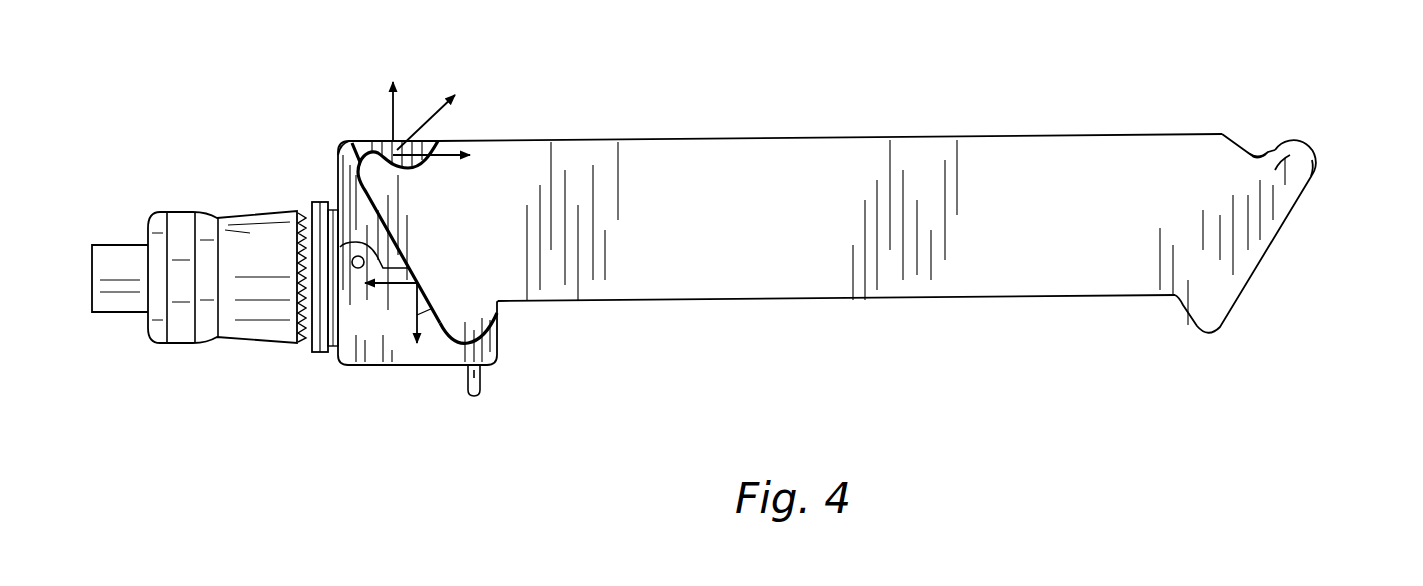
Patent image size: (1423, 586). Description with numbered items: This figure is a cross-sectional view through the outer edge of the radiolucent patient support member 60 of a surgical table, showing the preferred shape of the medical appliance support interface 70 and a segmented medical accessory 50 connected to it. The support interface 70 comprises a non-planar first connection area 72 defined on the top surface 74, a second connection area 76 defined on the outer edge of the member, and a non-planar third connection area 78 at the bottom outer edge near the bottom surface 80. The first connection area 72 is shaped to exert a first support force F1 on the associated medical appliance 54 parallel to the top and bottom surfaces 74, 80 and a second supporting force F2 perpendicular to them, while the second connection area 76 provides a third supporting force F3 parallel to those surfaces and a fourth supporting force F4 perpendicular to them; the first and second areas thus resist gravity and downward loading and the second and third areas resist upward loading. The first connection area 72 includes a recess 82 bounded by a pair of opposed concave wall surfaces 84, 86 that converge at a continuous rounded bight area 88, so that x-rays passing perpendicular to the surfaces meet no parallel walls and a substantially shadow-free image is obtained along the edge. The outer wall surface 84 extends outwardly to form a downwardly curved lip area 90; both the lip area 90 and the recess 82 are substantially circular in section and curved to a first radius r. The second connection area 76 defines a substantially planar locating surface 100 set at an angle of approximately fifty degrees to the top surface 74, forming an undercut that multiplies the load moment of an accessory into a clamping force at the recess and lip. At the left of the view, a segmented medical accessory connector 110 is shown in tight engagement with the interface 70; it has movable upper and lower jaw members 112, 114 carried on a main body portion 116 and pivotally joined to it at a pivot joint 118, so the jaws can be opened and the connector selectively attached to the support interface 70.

The cam arm body 50 is at (829, 215).
The medical appliance 54 is at (232, 258).
The radiolucent patient support member 60 is at (745, 228).
The medical appliance support interface 70 is at (880, 191).
The first connection area 72 is at (454, 124).
The top surface 74 is at (760, 139).
The second connection area 76 is at (437, 256).
The third connection area 78 is at (471, 321).
The bottom surface 80 is at (777, 301).
The recess 82 is at (1276, 130).
The outer wall surface 84 is at (1240, 138).
The concave wall surface 86 is at (1274, 148).
The bight area 88 is at (1263, 160).
The curved lip area 90 is at (1327, 181).
The locating surface 100 is at (1263, 260).
The segmented medical accessory connector 110 is at (367, 284).
The upper jaw member 112 is at (337, 167).
The lower jaw member 114 is at (432, 357).
The main body portion 116 is at (313, 350).
The pivot joint 118 is at (352, 263).
The first radius r is at (358, 148).
The first support force F1 is at (450, 158).
The second supporting force F2 is at (393, 101).
The third supporting force F3 is at (390, 288).
The fourth supporting force F4 is at (420, 315).